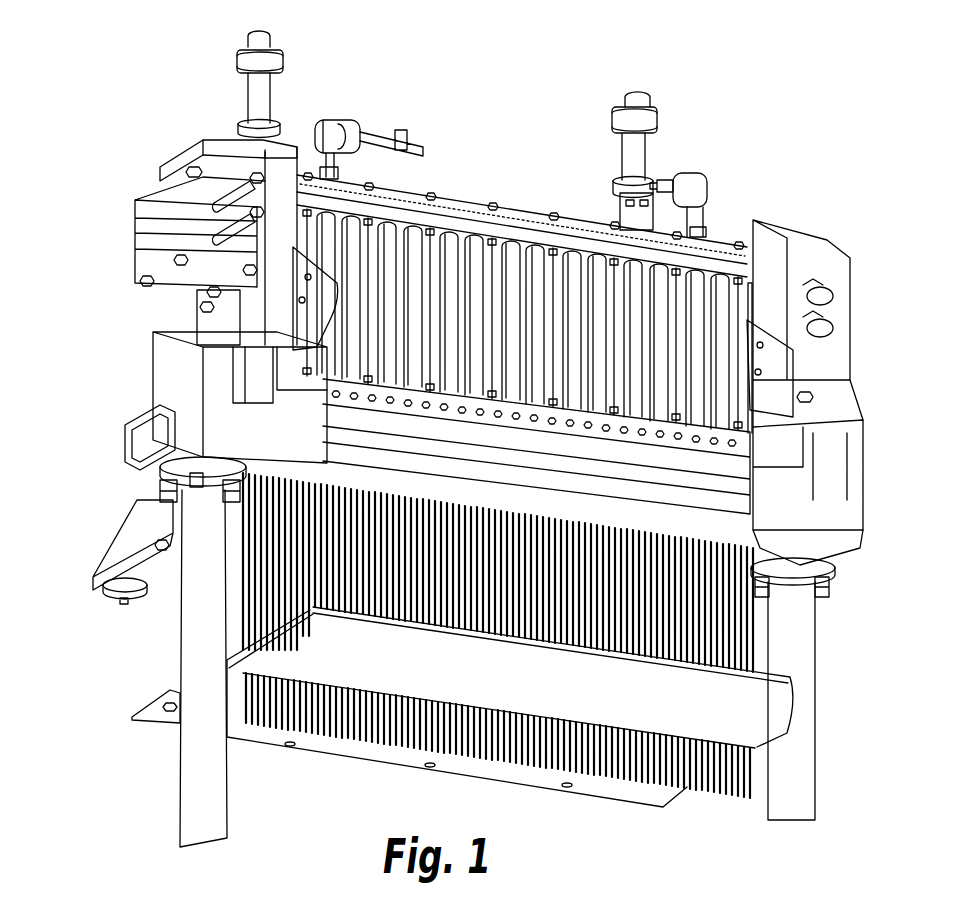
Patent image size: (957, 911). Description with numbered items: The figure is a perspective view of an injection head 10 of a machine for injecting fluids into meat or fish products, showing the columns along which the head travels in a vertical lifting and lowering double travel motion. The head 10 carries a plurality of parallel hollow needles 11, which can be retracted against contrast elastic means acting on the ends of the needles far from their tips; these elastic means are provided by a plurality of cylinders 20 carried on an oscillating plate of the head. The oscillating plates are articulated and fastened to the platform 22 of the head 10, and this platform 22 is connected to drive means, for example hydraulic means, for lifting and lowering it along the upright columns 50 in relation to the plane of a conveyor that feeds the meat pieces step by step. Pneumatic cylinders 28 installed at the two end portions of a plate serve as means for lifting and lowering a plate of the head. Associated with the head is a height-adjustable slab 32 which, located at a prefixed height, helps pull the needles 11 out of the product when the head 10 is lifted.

The injection head 10 is at (541, 200).
The hollow needles 11 is at (730, 621).
The cylinders 20 is at (637, 310).
The platform 22 is at (683, 493).
The pneumatic cylinders 28 is at (155, 353).
The slab 32 is at (775, 705).
The upright columns 50 is at (200, 607).